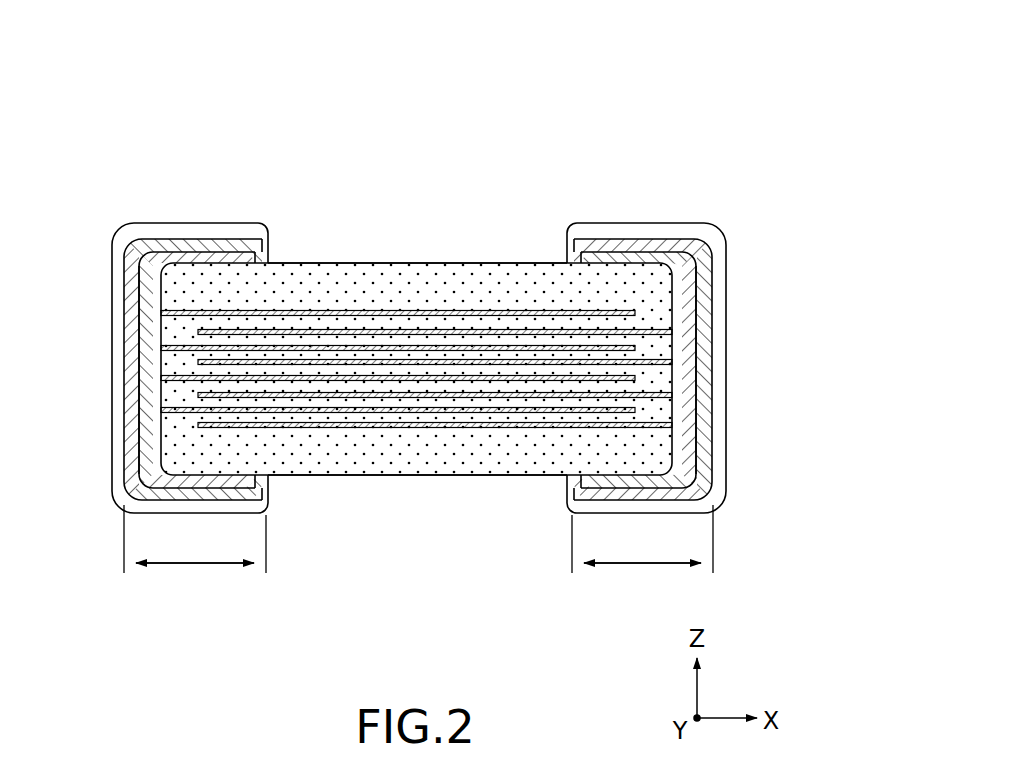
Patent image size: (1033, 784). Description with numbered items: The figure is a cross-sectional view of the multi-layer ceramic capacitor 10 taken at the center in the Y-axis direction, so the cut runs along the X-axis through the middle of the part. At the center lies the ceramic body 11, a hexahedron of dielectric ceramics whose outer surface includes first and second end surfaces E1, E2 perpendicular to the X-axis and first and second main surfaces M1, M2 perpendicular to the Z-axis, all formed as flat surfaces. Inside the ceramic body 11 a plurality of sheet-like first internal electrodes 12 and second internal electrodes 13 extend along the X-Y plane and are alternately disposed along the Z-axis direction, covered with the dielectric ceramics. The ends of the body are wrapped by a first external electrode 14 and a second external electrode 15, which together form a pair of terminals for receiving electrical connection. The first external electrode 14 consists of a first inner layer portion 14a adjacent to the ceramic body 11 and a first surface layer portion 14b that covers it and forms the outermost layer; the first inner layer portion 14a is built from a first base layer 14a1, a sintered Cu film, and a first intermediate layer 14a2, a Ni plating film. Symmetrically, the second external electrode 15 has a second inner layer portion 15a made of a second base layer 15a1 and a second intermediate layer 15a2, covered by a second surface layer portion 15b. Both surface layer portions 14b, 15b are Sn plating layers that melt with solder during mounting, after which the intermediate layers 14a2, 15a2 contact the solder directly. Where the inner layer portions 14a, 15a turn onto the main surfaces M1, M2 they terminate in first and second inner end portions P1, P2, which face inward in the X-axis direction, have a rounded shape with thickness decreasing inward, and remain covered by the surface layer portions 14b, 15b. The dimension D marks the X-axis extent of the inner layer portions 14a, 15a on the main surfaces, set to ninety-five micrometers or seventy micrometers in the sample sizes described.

The multi-layer ceramic capacitor 10 is at (226, 88).
The ceramic body 11 is at (375, 212).
The first internal electrodes 12 is at (282, 410).
The second internal electrodes 13 is at (470, 425).
The first external electrode 14 is at (161, 315).
The first inner layer portion 14a is at (200, 309).
The first base layer 14a1 is at (212, 256).
The first intermediate layer 14a2 is at (277, 168).
The first surface layer portion 14b is at (121, 232).
The second external electrode 15 is at (674, 315).
The second inner layer portion 15a is at (640, 309).
The second base layer 15a1 is at (626, 256).
The second intermediate layer 15a2 is at (568, 168).
The second surface layer portion 15b is at (722, 232).
The first main surface M1 is at (425, 262).
The second main surface M2 is at (415, 478).
The first end surface E1 is at (134, 378).
The second end surface E2 is at (701, 374).
The first inner end portion P1 is at (266, 235).
The second inner end portion P2 is at (571, 235).
The dimension of the inner layer portions in the X-axis direction D is at (418, 551).